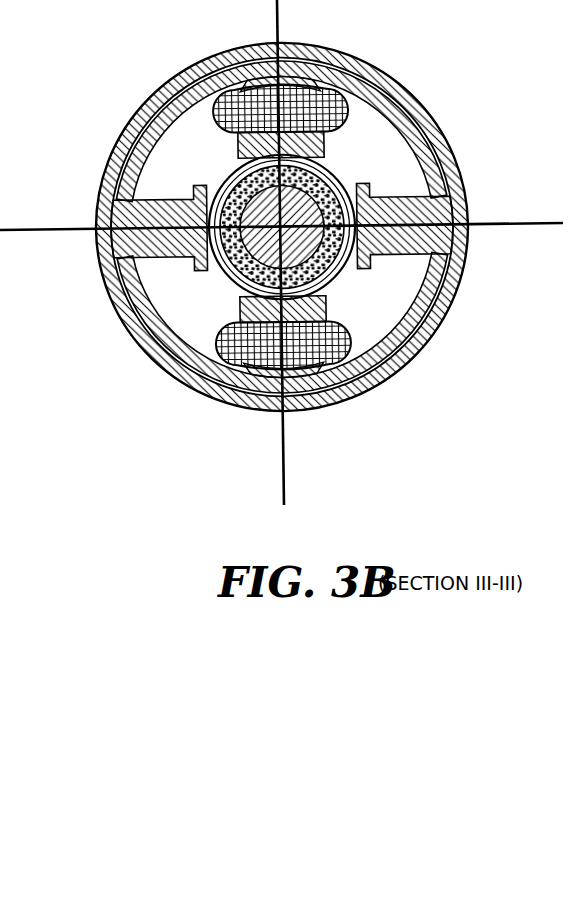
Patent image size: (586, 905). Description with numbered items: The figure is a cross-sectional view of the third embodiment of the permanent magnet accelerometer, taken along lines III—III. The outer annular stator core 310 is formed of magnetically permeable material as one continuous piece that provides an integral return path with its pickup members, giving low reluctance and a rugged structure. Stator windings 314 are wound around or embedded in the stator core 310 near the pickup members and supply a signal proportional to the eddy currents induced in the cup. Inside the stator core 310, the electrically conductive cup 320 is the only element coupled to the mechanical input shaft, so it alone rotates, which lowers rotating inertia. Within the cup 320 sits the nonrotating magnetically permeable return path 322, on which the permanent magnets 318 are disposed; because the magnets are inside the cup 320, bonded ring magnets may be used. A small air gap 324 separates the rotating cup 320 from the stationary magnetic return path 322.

The stator core 310 is at (325, 405).
The stator windings 314 is at (338, 58).
The permanent magnets 318 is at (232, 176).
The cup 320 is at (343, 176).
The magnetic return path 322 is at (338, 287).
The air gap 324 is at (235, 292).